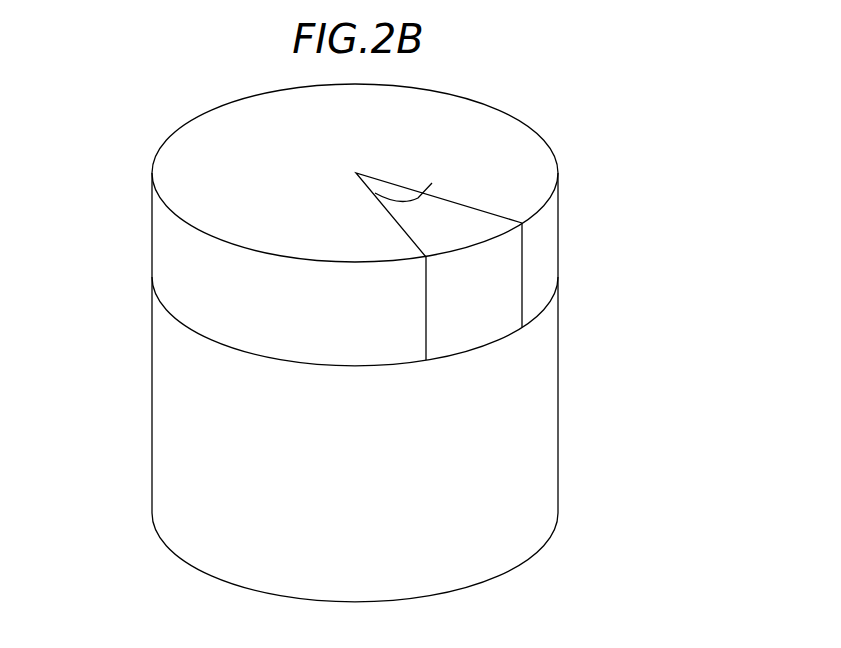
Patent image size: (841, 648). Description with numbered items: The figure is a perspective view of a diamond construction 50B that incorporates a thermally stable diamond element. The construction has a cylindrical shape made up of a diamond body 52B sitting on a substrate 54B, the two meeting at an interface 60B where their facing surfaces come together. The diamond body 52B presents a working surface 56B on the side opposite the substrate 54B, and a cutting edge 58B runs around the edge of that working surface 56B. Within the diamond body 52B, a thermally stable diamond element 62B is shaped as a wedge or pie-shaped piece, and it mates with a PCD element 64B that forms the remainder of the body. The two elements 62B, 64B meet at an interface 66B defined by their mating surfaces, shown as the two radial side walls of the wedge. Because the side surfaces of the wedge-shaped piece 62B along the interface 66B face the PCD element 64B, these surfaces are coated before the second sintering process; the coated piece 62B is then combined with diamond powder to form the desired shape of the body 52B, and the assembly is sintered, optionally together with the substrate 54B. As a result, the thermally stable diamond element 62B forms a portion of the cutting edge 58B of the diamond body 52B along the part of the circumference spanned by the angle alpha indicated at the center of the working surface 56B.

The diamond construction 50B is at (592, 100).
The diamond body 52B is at (107, 525).
The substrate 54B is at (295, 439).
The working surface 56B is at (257, 117).
The cutting edge 58B is at (217, 108).
The interface 60B is at (208, 338).
The thermally stable diamond element 62B is at (473, 317).
The PCD element 64B is at (420, 123).
The interface 66B is at (524, 246).